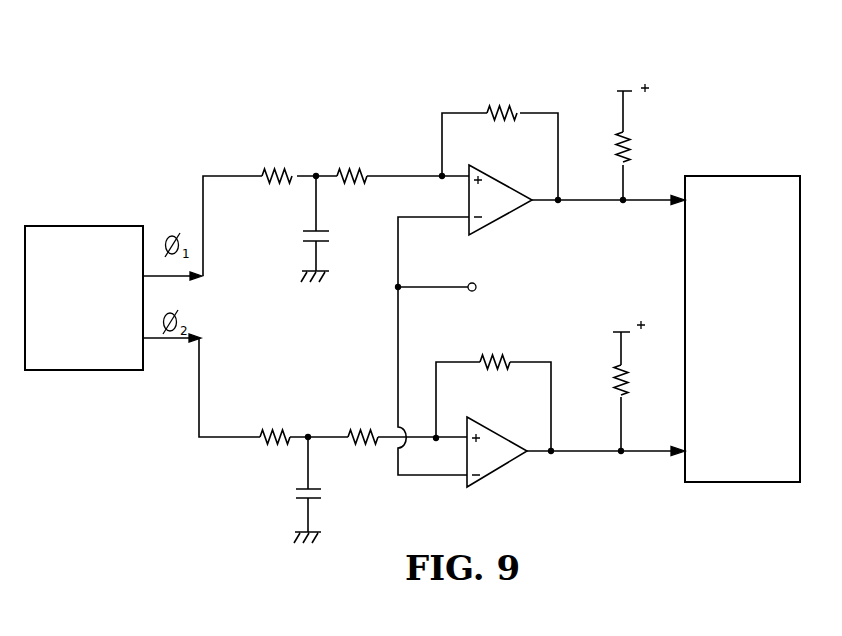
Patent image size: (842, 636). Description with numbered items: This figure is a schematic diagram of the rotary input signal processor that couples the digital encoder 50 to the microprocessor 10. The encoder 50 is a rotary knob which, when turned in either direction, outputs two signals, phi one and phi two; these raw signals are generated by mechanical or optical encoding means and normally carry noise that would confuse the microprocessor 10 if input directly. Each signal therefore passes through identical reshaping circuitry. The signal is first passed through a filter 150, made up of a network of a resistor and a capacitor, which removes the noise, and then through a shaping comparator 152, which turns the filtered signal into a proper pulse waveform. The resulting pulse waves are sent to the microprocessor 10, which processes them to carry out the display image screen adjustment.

The encoder 50 is at (67, 226).
The filter 150 is at (360, 141).
The shaping comparator 152 is at (647, 60).
The microprocessor 10 is at (721, 176).